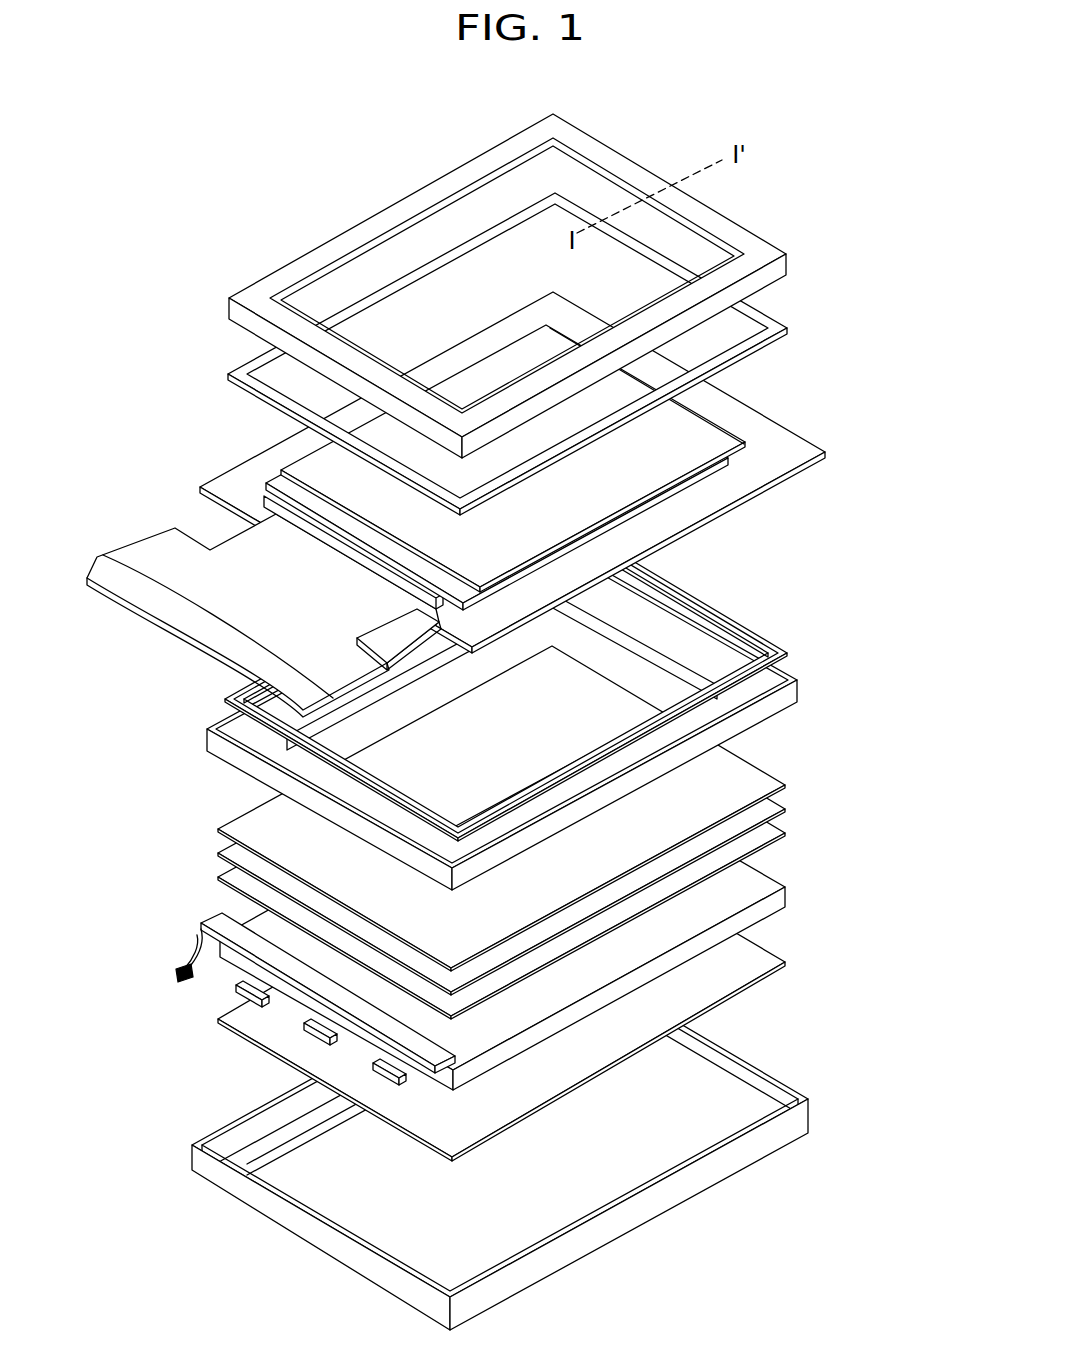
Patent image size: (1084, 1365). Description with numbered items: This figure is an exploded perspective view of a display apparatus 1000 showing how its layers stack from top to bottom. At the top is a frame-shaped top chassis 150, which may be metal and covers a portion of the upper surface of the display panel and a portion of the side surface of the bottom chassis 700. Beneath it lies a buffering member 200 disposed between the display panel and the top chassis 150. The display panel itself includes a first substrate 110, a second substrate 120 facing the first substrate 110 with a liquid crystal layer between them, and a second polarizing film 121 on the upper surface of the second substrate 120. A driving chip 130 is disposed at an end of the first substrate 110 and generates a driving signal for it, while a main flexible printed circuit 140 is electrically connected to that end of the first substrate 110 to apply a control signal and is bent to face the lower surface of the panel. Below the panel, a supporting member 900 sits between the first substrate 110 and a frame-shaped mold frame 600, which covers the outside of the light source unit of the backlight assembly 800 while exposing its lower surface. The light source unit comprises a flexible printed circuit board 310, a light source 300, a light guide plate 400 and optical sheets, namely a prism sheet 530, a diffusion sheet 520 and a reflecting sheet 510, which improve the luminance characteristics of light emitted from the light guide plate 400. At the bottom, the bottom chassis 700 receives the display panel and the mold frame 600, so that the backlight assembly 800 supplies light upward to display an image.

The display apparatus 1000 is at (387, 171).
The top chassis 150 is at (284, 275).
The buffering member 200 is at (236, 370).
The first substrate 110 is at (826, 454).
The second substrate 120 is at (748, 449).
The second polarizing film 121 is at (747, 443).
The driving chip 130 is at (266, 505).
The main flexible printed circuit 140 is at (155, 566).
The supporting member 900 is at (720, 612).
The mold frame 600 is at (798, 688).
The prism sheet 530 is at (772, 798).
The diffusion sheet 520 is at (773, 835).
The light guide plate 400 is at (778, 871).
The reflecting sheet 510 is at (790, 946).
The light source 300 is at (236, 998).
The flexible printed circuit board 310 is at (218, 916).
The bottom chassis 700 is at (778, 1056).
The backlight assembly 800 is at (860, 1082).